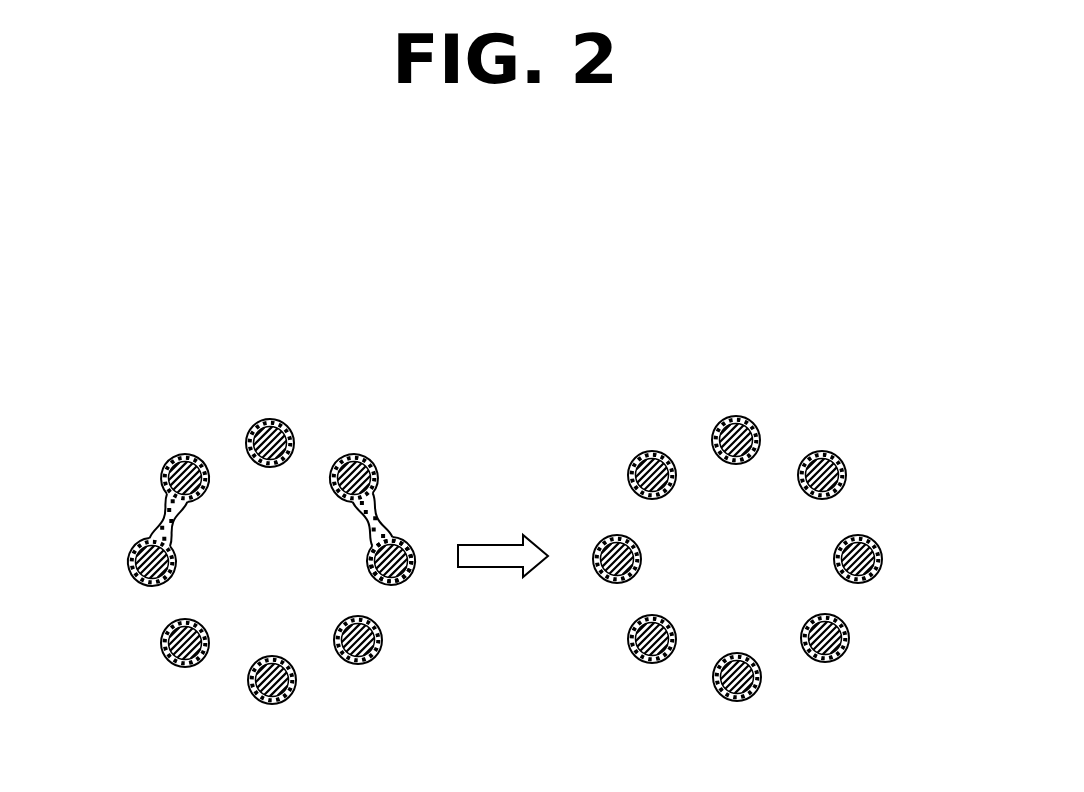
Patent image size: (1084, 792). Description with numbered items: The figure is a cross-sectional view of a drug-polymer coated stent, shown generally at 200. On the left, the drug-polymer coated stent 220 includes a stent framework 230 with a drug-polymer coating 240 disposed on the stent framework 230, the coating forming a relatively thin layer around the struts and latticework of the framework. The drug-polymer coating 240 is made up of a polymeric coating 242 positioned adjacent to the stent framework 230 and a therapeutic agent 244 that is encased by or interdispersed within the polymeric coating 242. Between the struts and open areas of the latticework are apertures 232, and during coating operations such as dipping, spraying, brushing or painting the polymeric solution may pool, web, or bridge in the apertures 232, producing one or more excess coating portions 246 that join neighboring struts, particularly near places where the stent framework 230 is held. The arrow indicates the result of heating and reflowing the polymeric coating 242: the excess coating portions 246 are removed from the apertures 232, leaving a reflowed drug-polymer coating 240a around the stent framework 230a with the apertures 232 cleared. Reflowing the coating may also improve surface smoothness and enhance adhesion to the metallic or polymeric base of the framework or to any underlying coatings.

The cross-sectional view of a drug-polymer coated stent 200 is at (160, 210).
The drug-polymer coated stent 220 is at (173, 407).
The stent framework 230 is at (283, 420).
The apertures 232 is at (318, 455).
The drug-polymer coating 240 is at (375, 458).
The polymeric coating 242 is at (408, 567).
The therapeutic agent 244 is at (407, 580).
The excess coating portions 246 is at (165, 518).
The stent framework 230a is at (750, 417).
The reflowed drug-polymer coating 240a is at (843, 455).